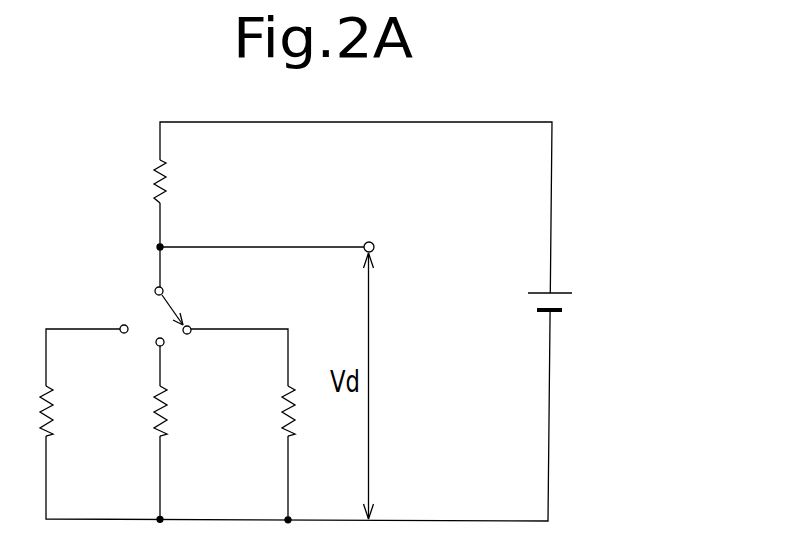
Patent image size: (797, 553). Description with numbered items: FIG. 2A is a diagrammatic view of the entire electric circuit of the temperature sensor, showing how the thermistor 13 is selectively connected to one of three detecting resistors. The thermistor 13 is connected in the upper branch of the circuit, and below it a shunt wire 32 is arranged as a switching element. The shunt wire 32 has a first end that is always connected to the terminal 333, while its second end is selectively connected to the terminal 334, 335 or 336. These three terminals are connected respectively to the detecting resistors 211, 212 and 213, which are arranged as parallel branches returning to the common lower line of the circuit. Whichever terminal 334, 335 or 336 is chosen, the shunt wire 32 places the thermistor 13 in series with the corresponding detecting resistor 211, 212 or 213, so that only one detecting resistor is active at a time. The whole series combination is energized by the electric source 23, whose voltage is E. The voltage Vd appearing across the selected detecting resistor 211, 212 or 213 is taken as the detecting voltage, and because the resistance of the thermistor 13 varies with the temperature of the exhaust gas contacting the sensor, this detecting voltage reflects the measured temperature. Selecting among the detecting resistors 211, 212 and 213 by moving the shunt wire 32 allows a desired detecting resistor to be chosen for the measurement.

The thermistor 13 is at (166, 186).
The shunt wire 32 is at (170, 305).
The terminal 333 is at (155, 288).
The terminal 334 is at (190, 334).
The terminal 335 is at (163, 346).
The terminal 336 is at (122, 325).
The detecting resistor 211 is at (294, 421).
The detecting resistor 212 is at (166, 421).
The detecting resistor 213 is at (52, 421).
The electric source 23 is at (593, 302).